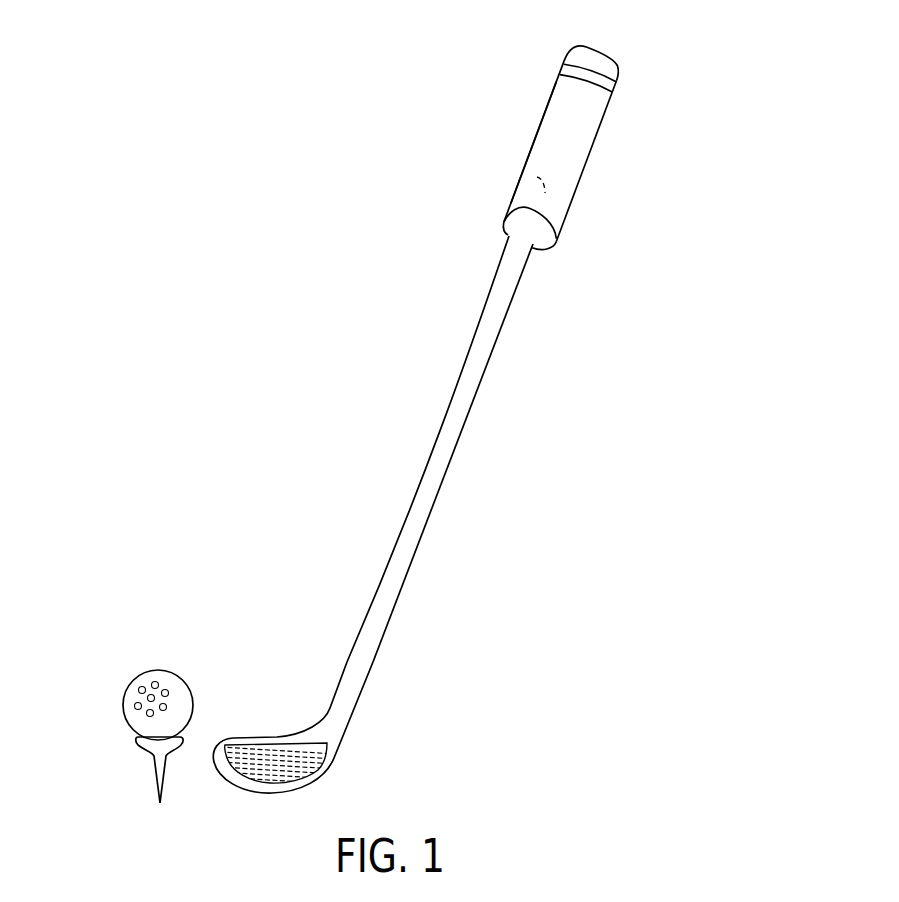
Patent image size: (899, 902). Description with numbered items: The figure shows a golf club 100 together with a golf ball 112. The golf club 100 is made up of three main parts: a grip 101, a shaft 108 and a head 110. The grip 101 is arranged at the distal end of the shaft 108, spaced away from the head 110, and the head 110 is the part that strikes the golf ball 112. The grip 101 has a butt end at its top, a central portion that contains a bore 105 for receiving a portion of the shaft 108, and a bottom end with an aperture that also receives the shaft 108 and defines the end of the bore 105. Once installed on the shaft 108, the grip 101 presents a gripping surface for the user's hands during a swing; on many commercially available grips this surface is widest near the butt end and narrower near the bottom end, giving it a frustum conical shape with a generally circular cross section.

The golf club 100 is at (481, 417).
The grip 101 is at (608, 148).
The bore 105 is at (537, 177).
The shaft 108 is at (472, 428).
The head 110 is at (273, 735).
The golf ball 112 is at (137, 697).